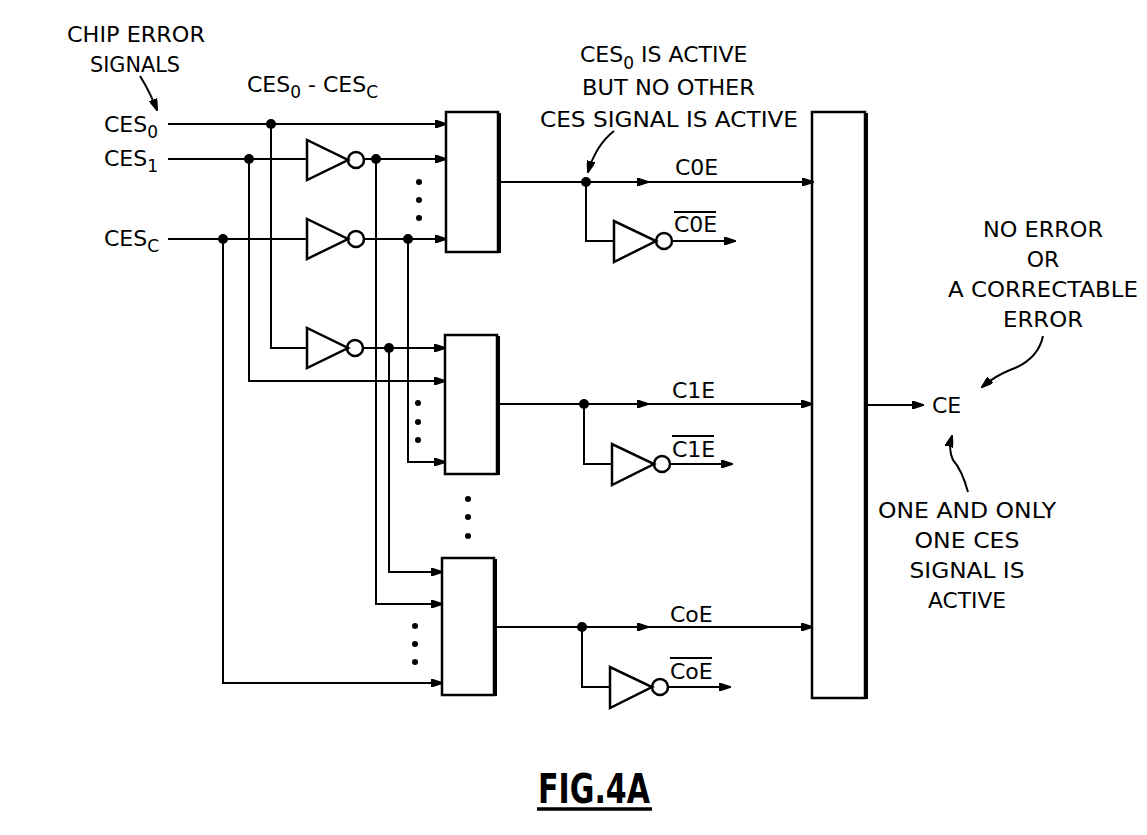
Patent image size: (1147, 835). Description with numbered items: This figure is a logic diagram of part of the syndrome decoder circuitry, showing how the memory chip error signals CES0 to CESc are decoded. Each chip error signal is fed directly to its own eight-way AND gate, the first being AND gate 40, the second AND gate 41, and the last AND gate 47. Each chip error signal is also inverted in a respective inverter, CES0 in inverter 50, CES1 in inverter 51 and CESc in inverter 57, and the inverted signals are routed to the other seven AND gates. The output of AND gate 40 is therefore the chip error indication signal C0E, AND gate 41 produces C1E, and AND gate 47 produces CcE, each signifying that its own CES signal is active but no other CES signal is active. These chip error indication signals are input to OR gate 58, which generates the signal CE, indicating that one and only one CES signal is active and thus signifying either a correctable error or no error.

The AND gate 40 is at (472, 112).
The AND gate 41 is at (470, 335).
The AND gate 47 is at (478, 558).
The inverter 50 is at (330, 338).
The inverter 51 is at (395, 143).
The inverter 57 is at (330, 228).
The OR gate 58 is at (866, 152).